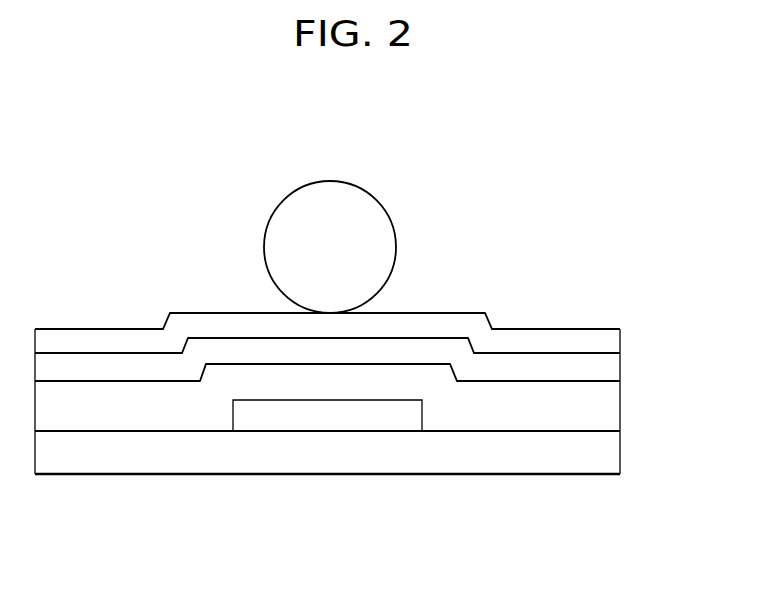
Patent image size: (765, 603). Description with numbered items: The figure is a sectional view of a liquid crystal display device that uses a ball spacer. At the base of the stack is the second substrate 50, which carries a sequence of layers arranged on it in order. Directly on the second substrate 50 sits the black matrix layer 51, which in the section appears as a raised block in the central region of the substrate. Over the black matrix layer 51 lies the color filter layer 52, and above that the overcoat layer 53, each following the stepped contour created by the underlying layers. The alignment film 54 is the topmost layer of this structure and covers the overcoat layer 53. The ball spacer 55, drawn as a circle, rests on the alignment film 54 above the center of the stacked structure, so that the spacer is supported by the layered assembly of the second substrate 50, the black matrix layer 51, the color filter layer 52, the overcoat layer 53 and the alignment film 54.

The second substrate 50 is at (610, 452).
The black matrix layer 51 is at (337, 418).
The color filter layer 52 is at (610, 405).
The overcoat layer 53 is at (610, 370).
The alignment film 54 is at (610, 340).
The ball spacer 55 is at (382, 230).